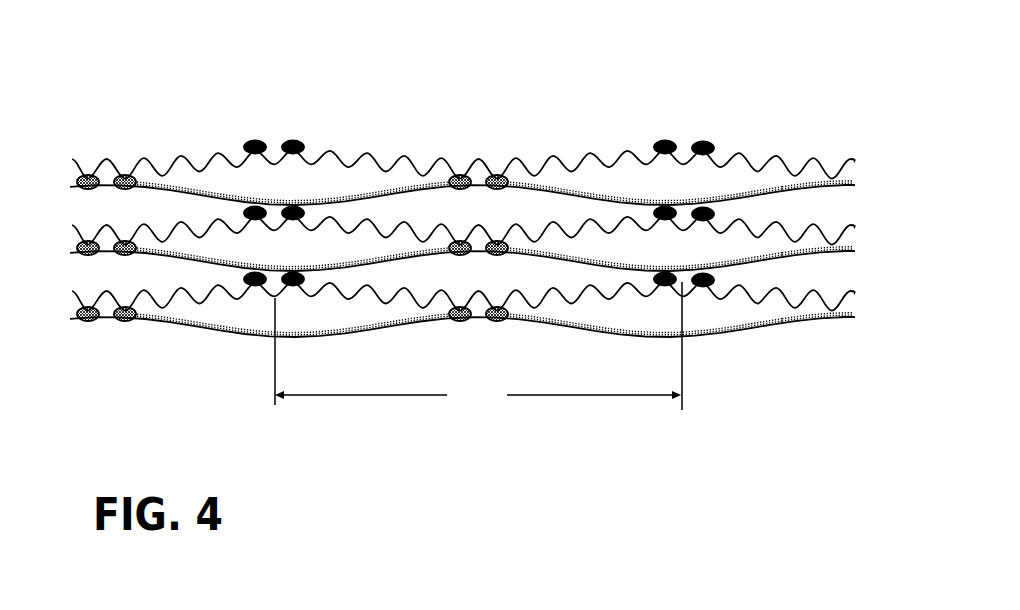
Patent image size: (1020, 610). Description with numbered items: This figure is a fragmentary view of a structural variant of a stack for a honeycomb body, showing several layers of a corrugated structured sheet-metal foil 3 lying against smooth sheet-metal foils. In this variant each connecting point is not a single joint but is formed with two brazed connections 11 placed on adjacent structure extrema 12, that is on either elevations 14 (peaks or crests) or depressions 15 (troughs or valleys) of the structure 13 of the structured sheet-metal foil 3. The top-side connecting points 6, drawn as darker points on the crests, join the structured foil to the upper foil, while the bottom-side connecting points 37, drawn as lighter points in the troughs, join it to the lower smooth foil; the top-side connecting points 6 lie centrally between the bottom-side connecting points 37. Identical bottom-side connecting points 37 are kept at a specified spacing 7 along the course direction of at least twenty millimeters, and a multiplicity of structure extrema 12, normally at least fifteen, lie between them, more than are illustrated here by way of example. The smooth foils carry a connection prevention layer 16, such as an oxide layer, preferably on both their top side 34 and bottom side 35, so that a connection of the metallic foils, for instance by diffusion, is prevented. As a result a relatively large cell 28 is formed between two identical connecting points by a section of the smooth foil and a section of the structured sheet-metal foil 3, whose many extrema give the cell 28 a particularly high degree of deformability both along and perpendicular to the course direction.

The structured sheet-metal foil 3 is at (460, 108).
The top-side connecting point 6 is at (715, 117).
The spacing 7 is at (478, 348).
The brazed connection 11 is at (455, 178).
The structure extrema 12 is at (67, 72).
The structure 13 is at (193, 128).
The elevation 14 is at (103, 172).
The depression 15 is at (162, 173).
The connection prevention layer 16 is at (758, 197).
The cell 28 is at (218, 309).
The top side 34 is at (818, 157).
The bottom side 35 is at (849, 176).
The bottom-side connecting point 37 is at (448, 115).